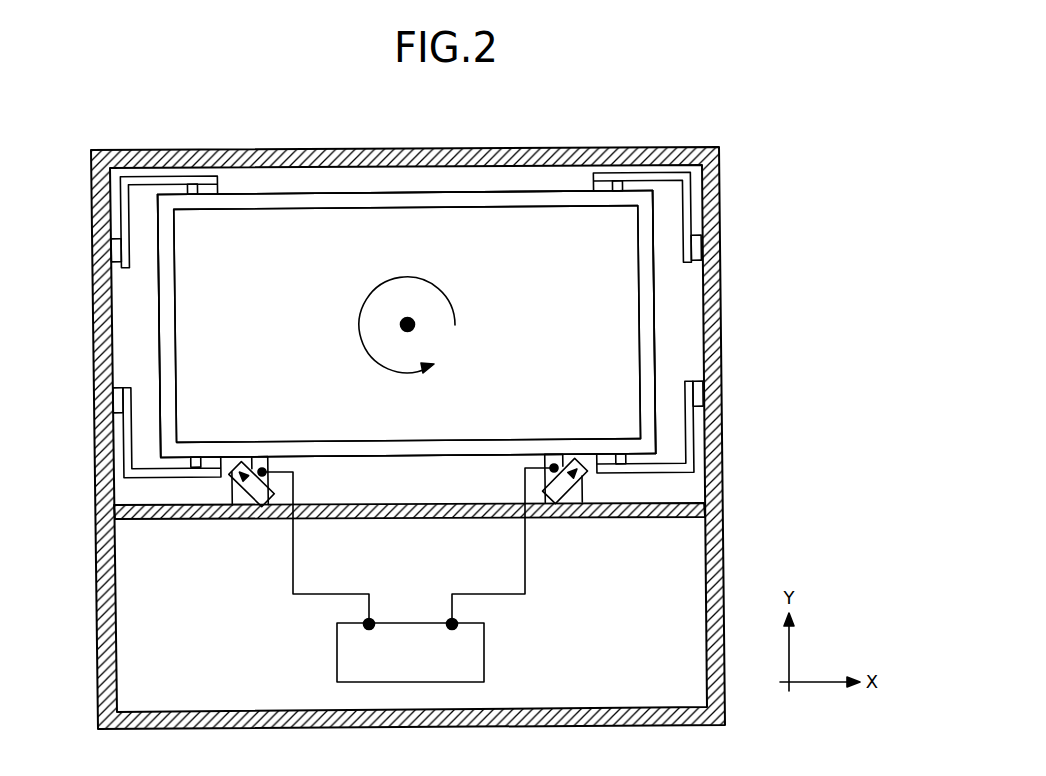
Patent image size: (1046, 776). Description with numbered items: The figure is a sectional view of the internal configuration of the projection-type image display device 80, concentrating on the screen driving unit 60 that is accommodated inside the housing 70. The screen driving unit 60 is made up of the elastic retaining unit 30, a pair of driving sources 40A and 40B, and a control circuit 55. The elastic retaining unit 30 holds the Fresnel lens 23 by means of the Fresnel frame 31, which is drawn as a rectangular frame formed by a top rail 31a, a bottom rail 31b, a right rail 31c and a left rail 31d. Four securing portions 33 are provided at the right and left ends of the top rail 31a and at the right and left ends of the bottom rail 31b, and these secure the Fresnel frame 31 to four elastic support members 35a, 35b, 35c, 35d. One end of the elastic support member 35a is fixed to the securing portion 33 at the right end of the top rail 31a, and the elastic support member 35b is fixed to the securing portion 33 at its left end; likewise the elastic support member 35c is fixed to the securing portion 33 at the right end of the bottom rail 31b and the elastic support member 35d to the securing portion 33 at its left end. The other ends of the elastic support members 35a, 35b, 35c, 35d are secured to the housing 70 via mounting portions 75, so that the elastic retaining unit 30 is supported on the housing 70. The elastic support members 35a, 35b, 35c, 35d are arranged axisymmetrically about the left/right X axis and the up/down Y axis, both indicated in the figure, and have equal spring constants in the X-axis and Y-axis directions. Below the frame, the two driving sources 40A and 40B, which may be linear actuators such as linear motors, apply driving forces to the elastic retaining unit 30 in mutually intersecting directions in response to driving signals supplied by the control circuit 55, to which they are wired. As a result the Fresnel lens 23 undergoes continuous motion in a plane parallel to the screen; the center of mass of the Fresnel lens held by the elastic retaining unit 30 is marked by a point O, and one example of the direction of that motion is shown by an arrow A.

The projection-type image display device 80 is at (716, 72).
The housing 70 is at (93, 655).
The elastic retaining unit 30 is at (569, 184).
The Fresnel frame 31 is at (520, 192).
The top rail 31a is at (284, 196).
The bottom rail 31b is at (248, 446).
The right rail 31c is at (162, 289).
The left rail 31d is at (648, 288).
The Fresnel lens 23 is at (598, 344).
The securing portion 33 is at (203, 195).
The elastic support member 35a is at (159, 177).
The elastic support member 35b is at (652, 177).
The elastic support member 35c is at (158, 479).
The elastic support member 35d is at (665, 479).
The mounting portion 75 is at (112, 249).
The driving source 40A is at (229, 480).
The driving source 40B is at (584, 477).
The screen driving unit 60 is at (281, 598).
The control circuit 55 is at (484, 650).
The point O is at (414, 328).
The arrow A is at (407, 340).